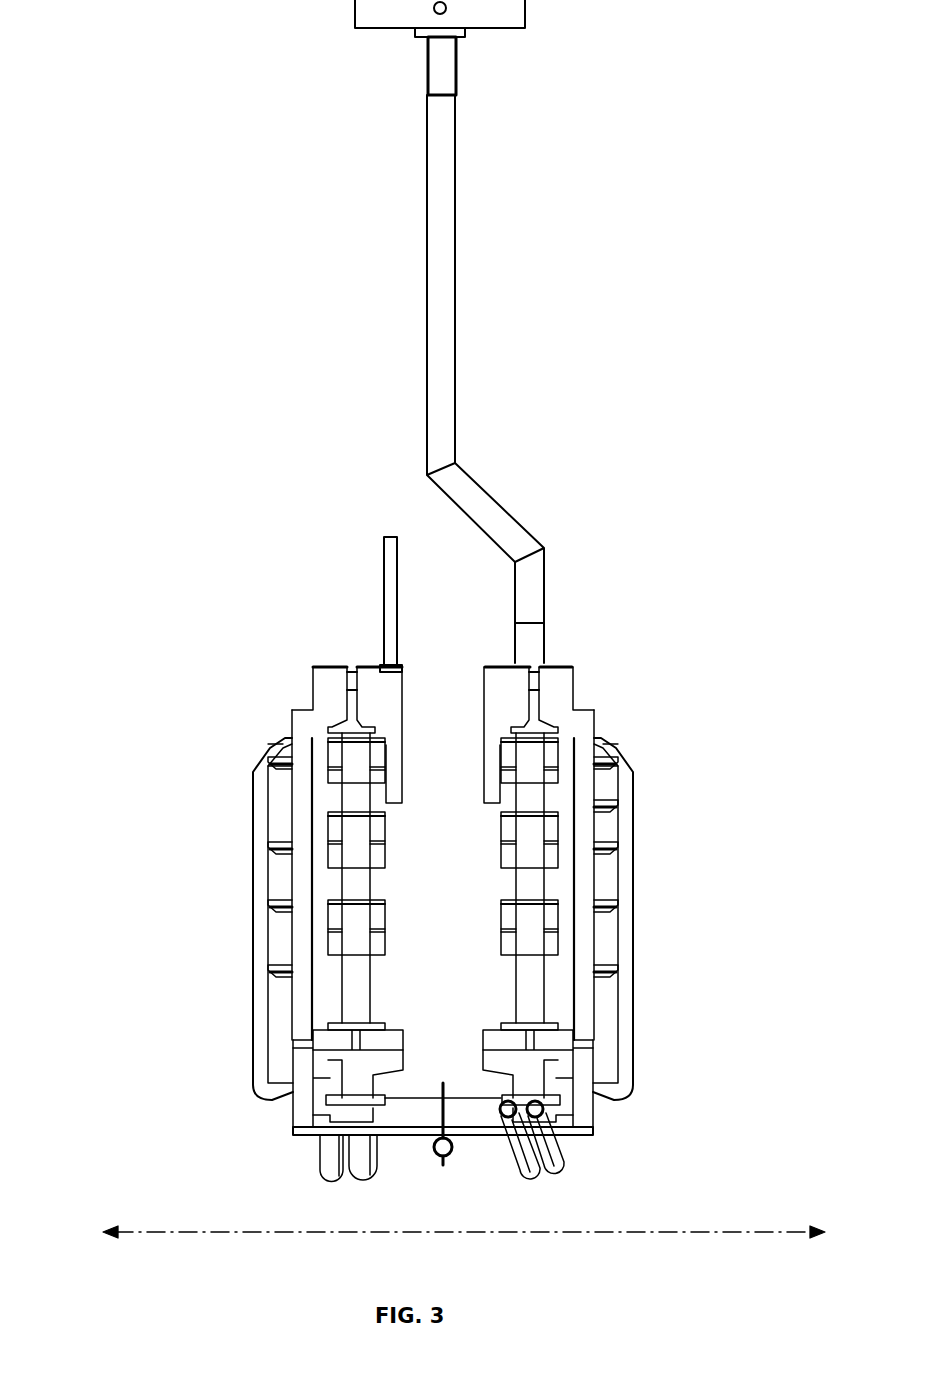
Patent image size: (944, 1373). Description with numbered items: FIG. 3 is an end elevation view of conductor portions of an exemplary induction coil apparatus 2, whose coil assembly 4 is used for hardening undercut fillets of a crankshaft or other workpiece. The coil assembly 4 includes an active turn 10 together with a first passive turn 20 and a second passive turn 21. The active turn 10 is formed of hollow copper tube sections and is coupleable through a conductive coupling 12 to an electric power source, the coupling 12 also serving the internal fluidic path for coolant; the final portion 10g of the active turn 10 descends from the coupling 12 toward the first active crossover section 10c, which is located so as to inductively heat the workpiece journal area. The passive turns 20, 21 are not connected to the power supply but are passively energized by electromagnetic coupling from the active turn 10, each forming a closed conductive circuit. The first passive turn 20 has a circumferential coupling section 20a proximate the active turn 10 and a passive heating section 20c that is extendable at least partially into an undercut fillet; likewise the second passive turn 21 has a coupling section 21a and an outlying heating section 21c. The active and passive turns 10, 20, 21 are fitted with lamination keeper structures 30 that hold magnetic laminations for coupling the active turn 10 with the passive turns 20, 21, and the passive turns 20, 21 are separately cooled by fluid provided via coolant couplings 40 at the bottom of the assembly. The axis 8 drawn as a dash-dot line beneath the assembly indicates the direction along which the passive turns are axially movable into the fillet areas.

The induction coil apparatus 2 is at (91, 21).
The coil assembly 4 is at (198, 199).
The axis 8 is at (148, 1233).
The active turn 10 is at (328, 391).
The first active crossover section 10c is at (425, 1137).
The final portion 10g is at (427, 272).
The conductive coupling 12 is at (355, 8).
The first passive turn 20 is at (603, 918).
The circumferential coupling section 20a is at (532, 886).
The passive heating section 20c is at (622, 885).
The second passive turn 21 is at (300, 918).
The coupling section 21a is at (362, 886).
The outlying heating section 21c is at (268, 862).
The lamination keeper structure 30 is at (320, 682).
The coolant coupling 40 is at (330, 1172).